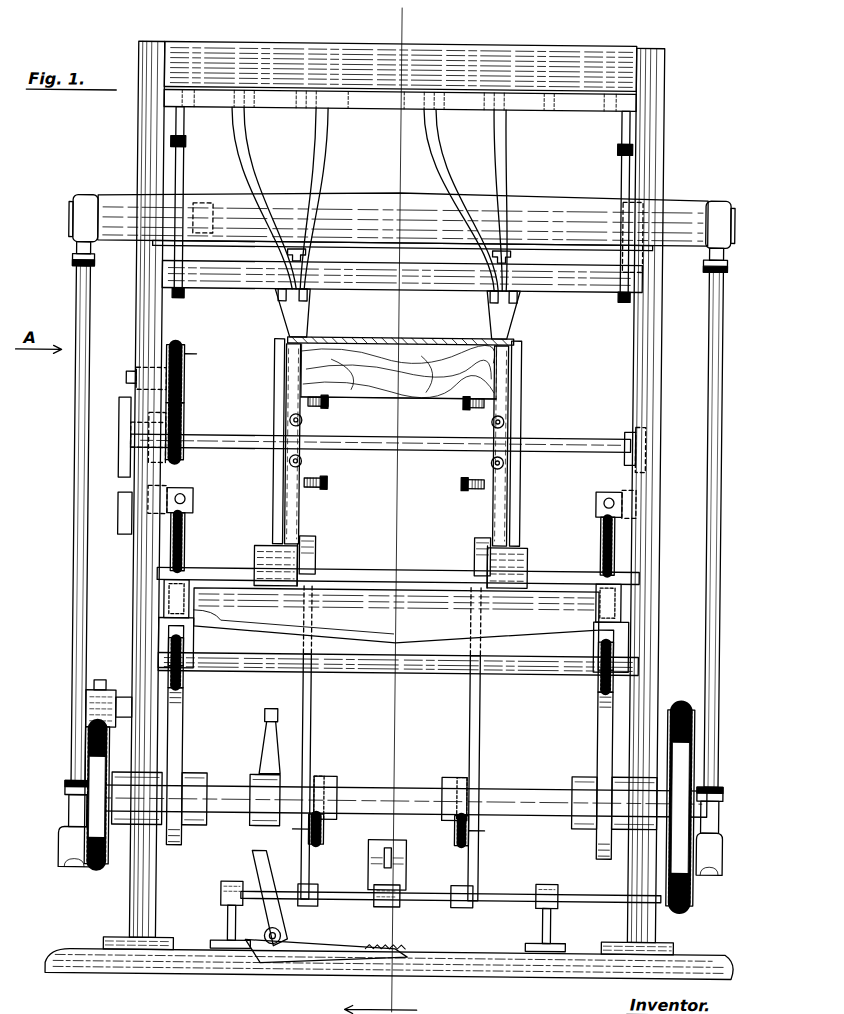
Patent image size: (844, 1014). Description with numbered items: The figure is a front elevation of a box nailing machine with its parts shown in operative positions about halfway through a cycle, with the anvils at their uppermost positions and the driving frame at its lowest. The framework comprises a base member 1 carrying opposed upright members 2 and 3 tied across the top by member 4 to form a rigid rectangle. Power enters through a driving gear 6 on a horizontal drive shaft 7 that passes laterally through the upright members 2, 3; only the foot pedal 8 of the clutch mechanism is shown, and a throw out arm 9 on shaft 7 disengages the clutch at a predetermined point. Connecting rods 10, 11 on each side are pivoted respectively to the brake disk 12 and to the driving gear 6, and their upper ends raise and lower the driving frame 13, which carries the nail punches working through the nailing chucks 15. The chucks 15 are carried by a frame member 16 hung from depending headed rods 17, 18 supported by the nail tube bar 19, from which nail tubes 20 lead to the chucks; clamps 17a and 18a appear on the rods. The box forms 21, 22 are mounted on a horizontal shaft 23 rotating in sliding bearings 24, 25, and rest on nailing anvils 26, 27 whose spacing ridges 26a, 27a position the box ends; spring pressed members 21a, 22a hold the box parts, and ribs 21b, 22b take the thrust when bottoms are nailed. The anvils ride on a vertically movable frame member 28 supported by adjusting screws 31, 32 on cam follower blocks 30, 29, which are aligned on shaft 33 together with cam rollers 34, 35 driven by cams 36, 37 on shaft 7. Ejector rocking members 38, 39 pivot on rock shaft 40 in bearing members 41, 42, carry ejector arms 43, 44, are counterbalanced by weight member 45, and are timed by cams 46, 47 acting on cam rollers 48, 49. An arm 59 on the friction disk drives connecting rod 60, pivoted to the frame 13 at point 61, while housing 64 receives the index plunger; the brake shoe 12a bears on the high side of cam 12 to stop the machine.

The base member 1 is at (148, 970).
The upright member 2 is at (134, 914).
The upright member 3 is at (660, 920).
The top tie member 4 is at (292, 50).
The driving gear 6 is at (698, 894).
The horizontal drive shaft 7 is at (366, 795).
The foot pedal 8 is at (380, 948).
The throw out arm 9 is at (267, 752).
The connecting rod 10 is at (74, 546).
The connecting rod 11 is at (722, 576).
The brake disk 12 is at (96, 872).
The brake shoe 12a is at (88, 735).
The driving frame 13 is at (374, 205).
The nailing chucks 15 is at (280, 318).
The frame member 16 is at (374, 284).
The headed rod 17 is at (172, 168).
The left rod clamp 17a is at (167, 143).
The headed rod 18 is at (626, 174).
The right rod clamp 18a is at (629, 147).
The nail tube bar 19 is at (632, 102).
The nail tubes 20 is at (326, 154).
The box form 21 is at (285, 483).
The spring pressed member 21a is at (317, 409).
The rib 21b is at (290, 415).
The box form 22 is at (509, 486).
The spring pressed member 22a is at (468, 408).
The rib 22b is at (506, 407).
The horizontal shaft 23 is at (390, 449).
The sliding bearing 24 is at (128, 466).
The sliding bearing 25 is at (645, 454).
The nailing anvil 26 is at (256, 552).
The spacing ridge 26a is at (300, 549).
The nailing anvil 27 is at (528, 553).
The spacing ridge 27a is at (480, 548).
The frame member 28 is at (397, 612).
The cam follower block 29 is at (596, 643).
The cam follower block 30 is at (190, 645).
The adjusting screw 31 is at (186, 534).
The adjusting screw 32 is at (600, 532).
The laterally extending shaft 33 is at (410, 668).
The cam roller 34 is at (190, 674).
The cam roller 35 is at (600, 676).
The cam 36 is at (186, 716).
The cam 37 is at (600, 726).
The rocking member 38 is at (314, 714).
The rocking member 39 is at (472, 714).
The rock shaft 40 is at (334, 893).
The bearing member 41 is at (224, 891).
The bearing member 42 is at (563, 890).
The ejector arm 43 is at (318, 556).
The ejector arm 44 is at (476, 557).
The weight member 45 is at (410, 855).
The cam 46 is at (326, 784).
The cam 47 is at (448, 786).
The cam roller 48 is at (328, 833).
The cam roller 49 is at (458, 835).
The arm 59 is at (186, 424).
The connecting rod 60 is at (185, 370).
The pivot point 61 is at (200, 214).
The housing 64 is at (193, 513).